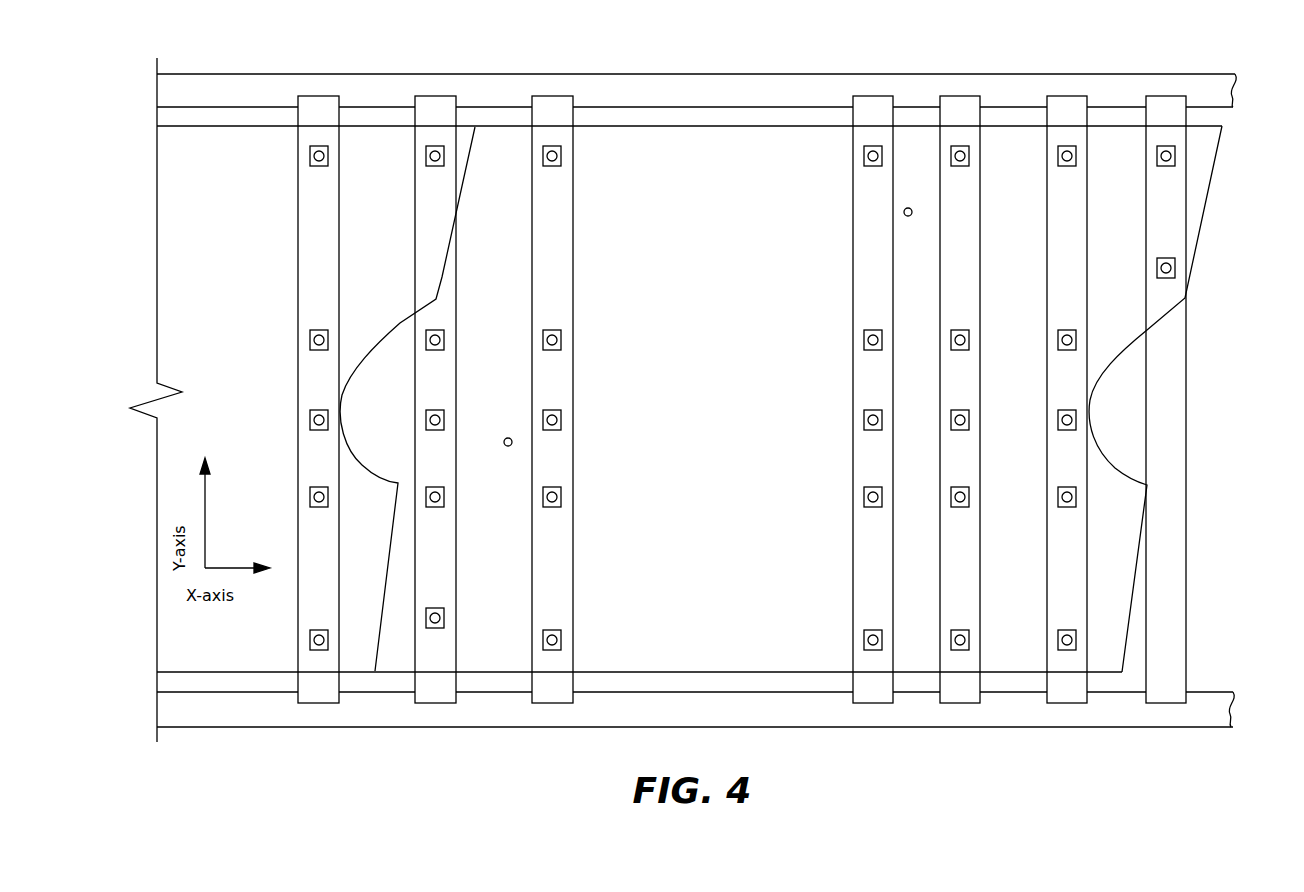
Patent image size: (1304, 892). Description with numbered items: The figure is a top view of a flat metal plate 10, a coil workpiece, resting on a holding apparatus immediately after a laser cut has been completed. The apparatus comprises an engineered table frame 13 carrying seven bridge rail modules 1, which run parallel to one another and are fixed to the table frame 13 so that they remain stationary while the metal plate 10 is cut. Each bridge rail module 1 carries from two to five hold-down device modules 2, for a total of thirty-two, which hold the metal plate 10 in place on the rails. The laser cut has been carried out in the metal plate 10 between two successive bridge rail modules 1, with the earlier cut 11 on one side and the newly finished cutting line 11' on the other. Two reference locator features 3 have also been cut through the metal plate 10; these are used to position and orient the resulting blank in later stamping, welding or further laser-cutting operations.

The bridge rail module 1 is at (572, 647).
The hold-down device module 2 is at (428, 628).
The reference locator feature 3 is at (507, 448).
The metal plate 10 is at (229, 369).
The cut 11 is at (429, 399).
The new cutting line 11' is at (1180, 399).
The table frame 13 is at (1132, 93).